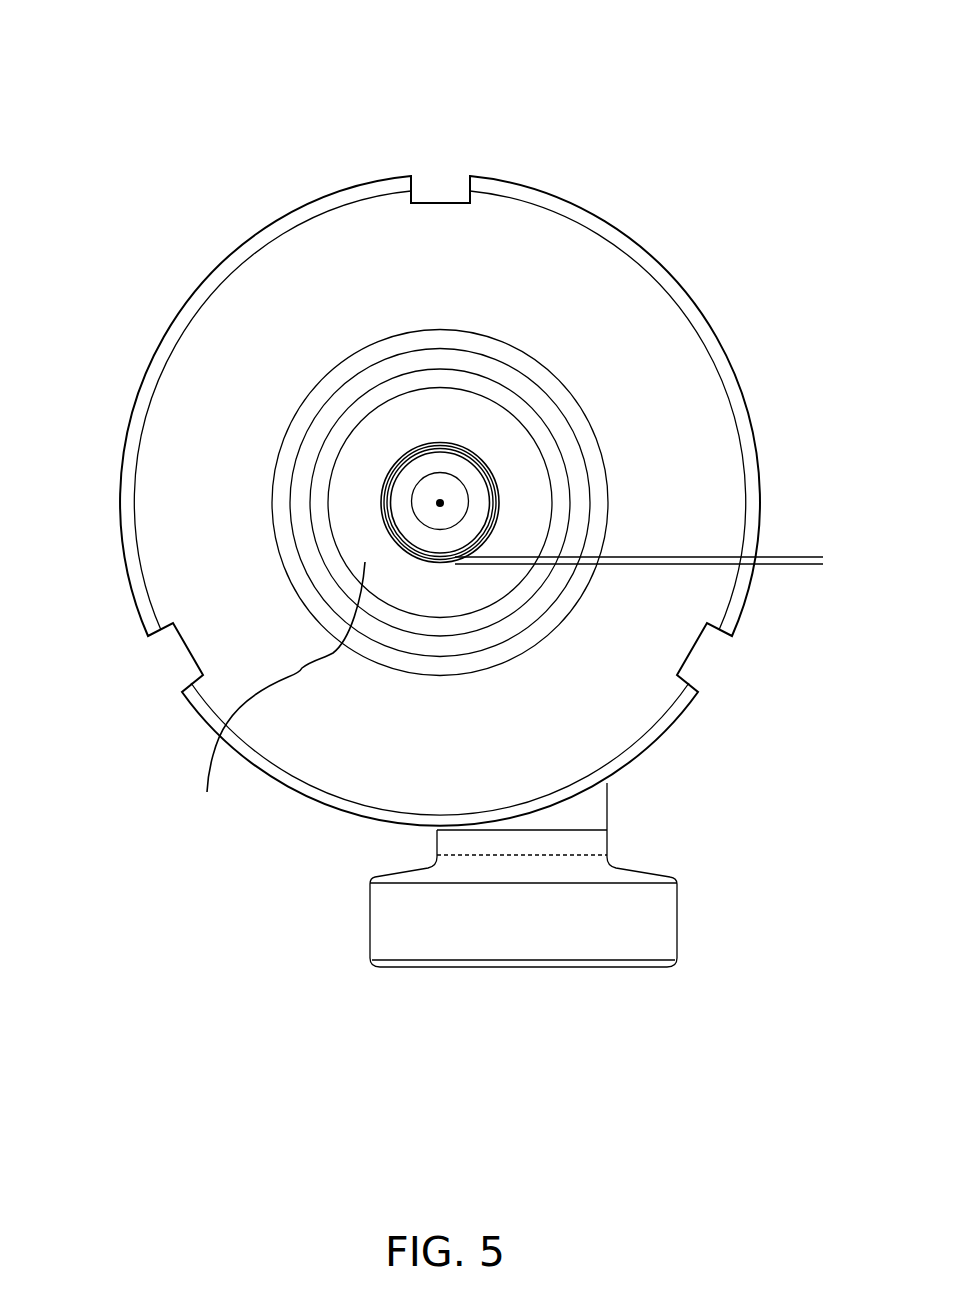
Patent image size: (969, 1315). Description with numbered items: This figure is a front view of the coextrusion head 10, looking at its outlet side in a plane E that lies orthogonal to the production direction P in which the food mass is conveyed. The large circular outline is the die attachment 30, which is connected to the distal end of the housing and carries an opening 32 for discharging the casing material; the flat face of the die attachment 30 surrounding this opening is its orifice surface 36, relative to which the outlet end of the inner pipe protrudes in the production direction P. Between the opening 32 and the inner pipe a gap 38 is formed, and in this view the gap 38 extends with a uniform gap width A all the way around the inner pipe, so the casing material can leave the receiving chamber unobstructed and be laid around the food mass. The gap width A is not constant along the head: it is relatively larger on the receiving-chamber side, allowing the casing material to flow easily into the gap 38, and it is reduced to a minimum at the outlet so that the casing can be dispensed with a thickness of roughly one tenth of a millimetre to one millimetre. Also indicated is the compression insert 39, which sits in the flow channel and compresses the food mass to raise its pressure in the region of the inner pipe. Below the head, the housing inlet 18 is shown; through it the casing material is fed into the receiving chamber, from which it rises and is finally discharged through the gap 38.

The coextrusion head 10 is at (189, 180).
The housing inlet 18 is at (398, 915).
The die attachment 30 is at (723, 538).
The opening 32 is at (382, 514).
The orifice surface 36 is at (269, 702).
The gap 38 is at (457, 444).
The compression insert 39 is at (463, 492).
The production direction P is at (446, 503).
The gap width A is at (815, 518).
The plane E is at (155, 908).